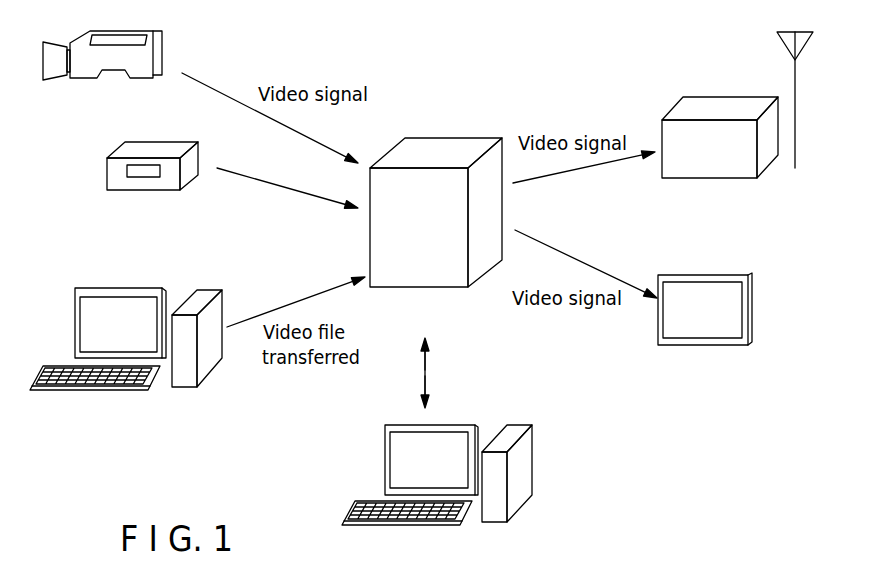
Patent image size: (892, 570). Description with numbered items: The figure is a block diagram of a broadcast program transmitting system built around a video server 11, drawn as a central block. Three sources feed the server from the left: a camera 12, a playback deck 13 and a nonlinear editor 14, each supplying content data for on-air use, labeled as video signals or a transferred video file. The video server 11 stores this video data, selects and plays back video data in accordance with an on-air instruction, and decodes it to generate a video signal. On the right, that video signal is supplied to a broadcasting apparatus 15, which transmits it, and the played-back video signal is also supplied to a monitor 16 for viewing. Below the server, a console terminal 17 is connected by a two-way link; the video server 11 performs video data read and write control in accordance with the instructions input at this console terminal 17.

The video server 11 is at (443, 137).
The camera 12 is at (162, 38).
The playback deck 13 is at (170, 142).
The nonlinear editor 14 is at (130, 288).
The broadcasting apparatus 15 is at (720, 96).
The monitor 16 is at (707, 272).
The console terminal 17 is at (463, 423).